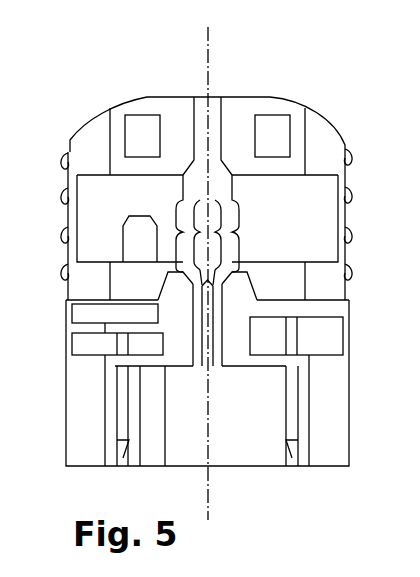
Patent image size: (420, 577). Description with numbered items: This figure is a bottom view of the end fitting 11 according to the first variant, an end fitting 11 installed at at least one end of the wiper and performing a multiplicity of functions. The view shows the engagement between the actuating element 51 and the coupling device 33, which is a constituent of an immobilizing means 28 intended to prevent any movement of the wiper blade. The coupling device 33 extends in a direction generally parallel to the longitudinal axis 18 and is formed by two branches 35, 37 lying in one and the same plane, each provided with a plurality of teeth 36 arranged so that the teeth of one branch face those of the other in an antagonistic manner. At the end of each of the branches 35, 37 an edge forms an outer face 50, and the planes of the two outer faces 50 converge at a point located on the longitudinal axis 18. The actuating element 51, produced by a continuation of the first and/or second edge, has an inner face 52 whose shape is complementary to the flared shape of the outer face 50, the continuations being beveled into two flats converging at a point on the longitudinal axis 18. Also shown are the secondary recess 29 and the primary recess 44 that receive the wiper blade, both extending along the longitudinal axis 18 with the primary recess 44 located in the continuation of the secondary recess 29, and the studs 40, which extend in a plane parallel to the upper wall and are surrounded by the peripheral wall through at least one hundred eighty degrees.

The end fitting 11 is at (372, 404).
The longitudinal axis 18 is at (208, 473).
The immobilizing means 28 is at (150, 287).
The secondary recess 29 is at (202, 97).
The coupling device 33 is at (157, 189).
The branch 35 is at (182, 224).
The tooth 36 is at (178, 236).
The branch 37 is at (237, 192).
The stud 40 is at (411, 32).
The primary recess 44 is at (202, 341).
The outer face 50 is at (232, 262).
The actuating element 51 is at (257, 281).
The inner face 52 is at (235, 288).